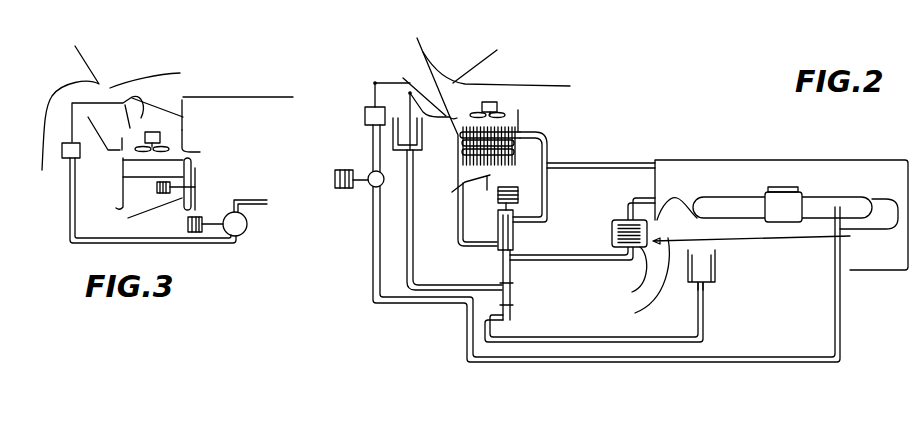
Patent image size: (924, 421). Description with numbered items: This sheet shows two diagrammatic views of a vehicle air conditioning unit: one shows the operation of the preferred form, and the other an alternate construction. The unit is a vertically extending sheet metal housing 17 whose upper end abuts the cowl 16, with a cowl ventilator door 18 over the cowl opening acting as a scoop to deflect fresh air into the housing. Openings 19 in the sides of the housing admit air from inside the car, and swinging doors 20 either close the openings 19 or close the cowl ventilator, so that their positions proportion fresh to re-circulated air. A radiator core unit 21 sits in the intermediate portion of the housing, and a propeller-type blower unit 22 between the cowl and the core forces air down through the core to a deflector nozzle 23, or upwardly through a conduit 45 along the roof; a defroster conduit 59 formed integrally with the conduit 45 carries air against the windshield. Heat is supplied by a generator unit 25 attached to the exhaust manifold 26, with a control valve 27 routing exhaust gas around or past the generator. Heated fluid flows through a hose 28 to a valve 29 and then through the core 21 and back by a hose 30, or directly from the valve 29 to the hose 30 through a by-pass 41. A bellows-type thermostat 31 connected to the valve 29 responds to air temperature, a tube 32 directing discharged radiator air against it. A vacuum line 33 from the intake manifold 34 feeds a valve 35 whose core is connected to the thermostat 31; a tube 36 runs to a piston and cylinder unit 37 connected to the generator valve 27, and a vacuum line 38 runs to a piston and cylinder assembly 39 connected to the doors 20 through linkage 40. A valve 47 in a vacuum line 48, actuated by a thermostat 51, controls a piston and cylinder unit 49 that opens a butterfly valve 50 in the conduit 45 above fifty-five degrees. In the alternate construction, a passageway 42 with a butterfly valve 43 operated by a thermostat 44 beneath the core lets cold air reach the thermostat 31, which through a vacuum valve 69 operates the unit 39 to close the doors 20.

In FIG. 3, the cowl 16 is at (117, 63).
In FIG. 2, the cowl 16 is at (448, 70).
In FIG. 3, the housing 17 is at (123, 198).
In FIG. 2, the housing 17 is at (460, 148).
In FIG. 3, the cowl ventilator door 18 is at (163, 76).
In FIG. 2, the cowl ventilator door 18 is at (486, 59).
In FIG. 3, the openings 19 is at (181, 125).
In FIG. 2, the openings 19 is at (520, 98).
In FIG. 3, the swinging doors 20 is at (143, 101).
In FIG. 2, the swinging doors 20 is at (502, 85).
In FIG. 3, the radiator core unit 21 is at (128, 168).
In FIG. 2, the radiator core unit 21 is at (460, 135).
In FIG. 3, the blower unit 22 is at (166, 128).
In FIG. 2, the blower unit 22 is at (483, 102).
In FIG. 3, the deflector nozzle 23 is at (128, 218).
In FIG. 2, the generator unit 25 is at (618, 237).
In FIG. 2, the exhaust manifold 26 is at (742, 241).
In FIG. 2, the control valve 27 is at (663, 237).
In FIG. 2, the hose 28 is at (550, 262).
In FIG. 2, the valve 29 is at (498, 240).
In FIG. 2, the hose 30 is at (612, 163).
In FIG. 3, the bellows-type thermostat 31 is at (201, 215).
In FIG. 2, the bellows-type thermostat 31 is at (516, 173).
In FIG. 2, the tube 32 is at (470, 192).
In FIG. 3, the vacuum line 33 is at (271, 190).
In FIG. 2, the vacuum line 33 is at (762, 357).
In FIG. 2, the intake manifold 34 is at (822, 202).
In FIG. 2, the valve 35 is at (512, 303).
In FIG. 2, the tube 36 is at (568, 337).
In FIG. 2, the piston and cylinder unit 37 is at (716, 290).
In FIG. 2, the vacuum line 38 is at (413, 263).
In FIG. 3, the piston and cylinder assembly 39 is at (60, 155).
In FIG. 2, the piston and cylinder assembly 39 is at (417, 150).
In FIG. 3, the linkage 40 is at (182, 100).
In FIG. 2, the by-pass 41 is at (547, 197).
In FIG. 3, the passageway 42 is at (200, 152).
In FIG. 3, the butterfly valve 43 is at (196, 164).
In FIG. 3, the thermostat 44 is at (157, 190).
In FIG. 3, the conduit 45 is at (95, 112).
In FIG. 2, the conduit 45 is at (402, 77).
In FIG. 2, the valve 47 is at (370, 188).
In FIG. 2, the vacuum line 48 is at (373, 285).
In FIG. 2, the piston and cylinder unit 49 is at (363, 120).
In FIG. 2, the butterfly valve 50 is at (402, 75).
In FIG. 2, the thermostat 51 is at (352, 153).
In FIG. 2, the defroster conduit 59 is at (438, 49).
In FIG. 3, the vacuum valve 69 is at (245, 230).